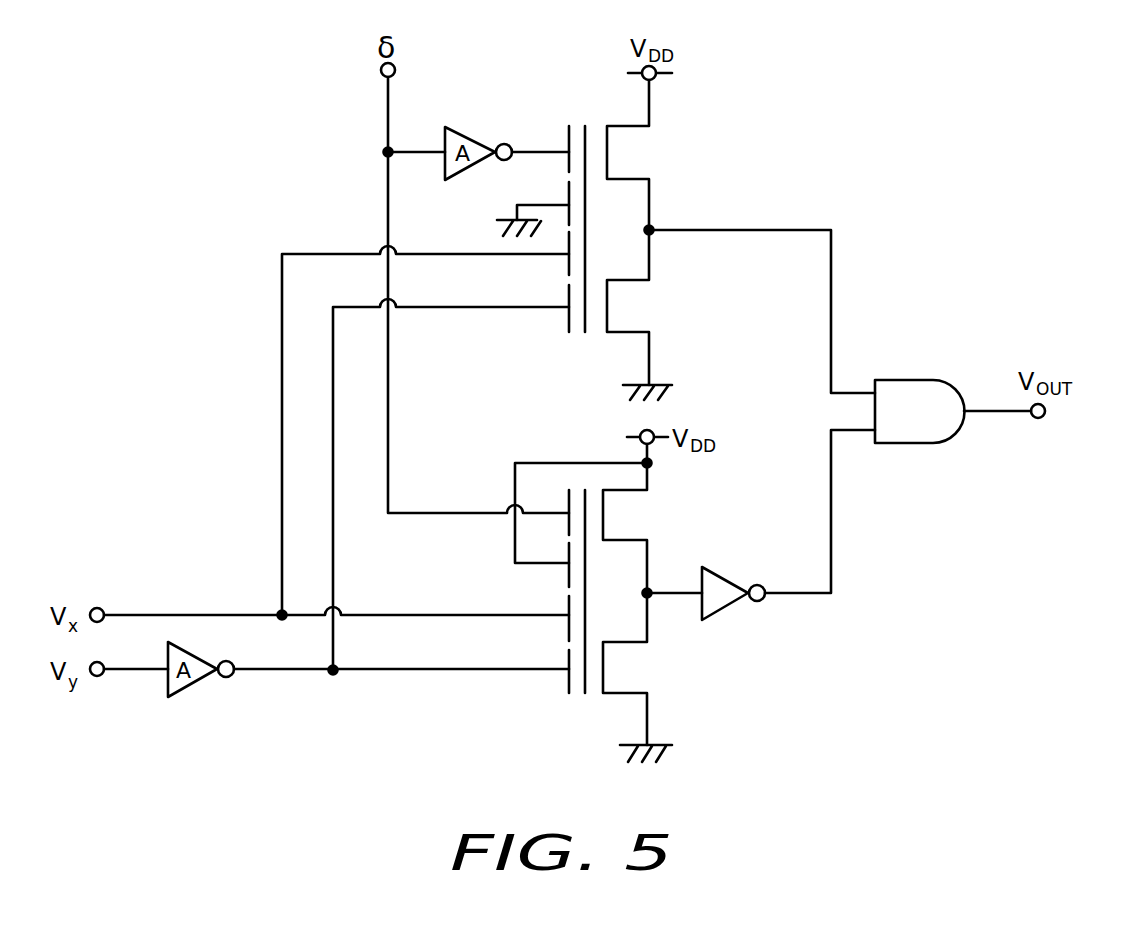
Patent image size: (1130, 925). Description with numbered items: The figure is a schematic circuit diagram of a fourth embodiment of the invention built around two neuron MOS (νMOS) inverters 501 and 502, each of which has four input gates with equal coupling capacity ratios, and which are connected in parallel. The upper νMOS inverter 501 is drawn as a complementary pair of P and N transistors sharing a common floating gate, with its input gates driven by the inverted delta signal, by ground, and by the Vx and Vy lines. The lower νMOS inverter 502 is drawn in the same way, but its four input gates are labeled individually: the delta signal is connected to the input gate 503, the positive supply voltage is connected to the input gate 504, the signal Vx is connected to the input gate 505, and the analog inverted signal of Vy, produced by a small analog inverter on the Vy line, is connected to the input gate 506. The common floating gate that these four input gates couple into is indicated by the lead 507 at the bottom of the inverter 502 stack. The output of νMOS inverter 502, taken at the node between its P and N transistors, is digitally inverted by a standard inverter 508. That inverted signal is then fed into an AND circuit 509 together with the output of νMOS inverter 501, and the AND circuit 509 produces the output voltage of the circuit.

The νMOS inverter 501 is at (622, 88).
The νMOS inverter 502 is at (535, 585).
The input gate 503 is at (565, 499).
The input gate 504 is at (565, 556).
The input gate 505 is at (565, 601).
The input gate 506 is at (565, 651).
The channel region of transistor 502 507 is at (586, 697).
The standard inverter 508 is at (722, 573).
The AND circuit 509 is at (918, 380).